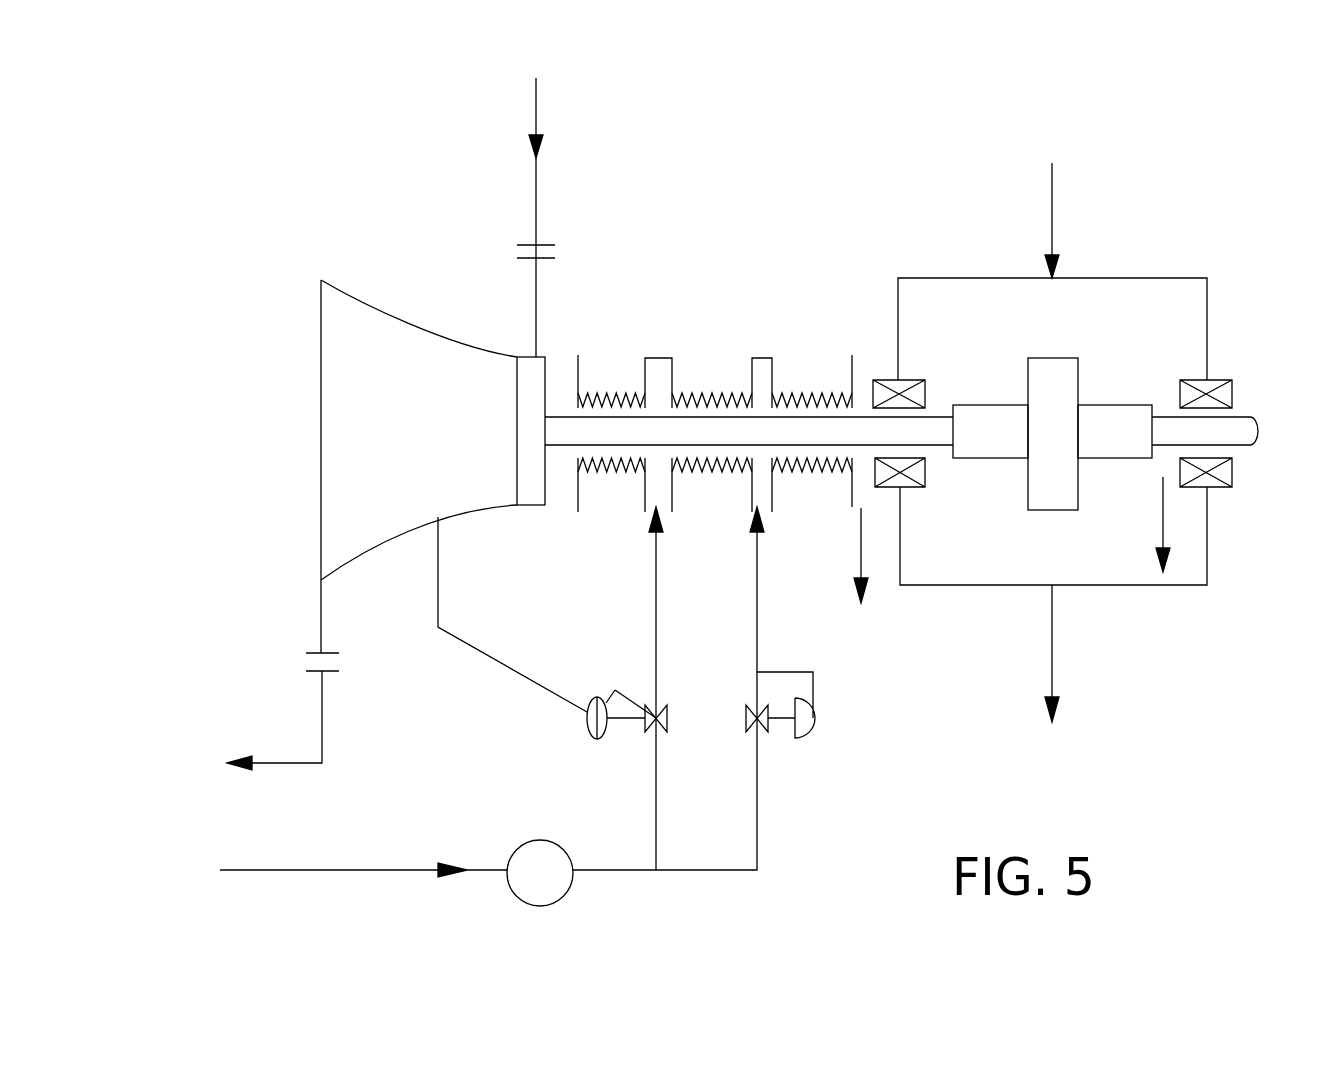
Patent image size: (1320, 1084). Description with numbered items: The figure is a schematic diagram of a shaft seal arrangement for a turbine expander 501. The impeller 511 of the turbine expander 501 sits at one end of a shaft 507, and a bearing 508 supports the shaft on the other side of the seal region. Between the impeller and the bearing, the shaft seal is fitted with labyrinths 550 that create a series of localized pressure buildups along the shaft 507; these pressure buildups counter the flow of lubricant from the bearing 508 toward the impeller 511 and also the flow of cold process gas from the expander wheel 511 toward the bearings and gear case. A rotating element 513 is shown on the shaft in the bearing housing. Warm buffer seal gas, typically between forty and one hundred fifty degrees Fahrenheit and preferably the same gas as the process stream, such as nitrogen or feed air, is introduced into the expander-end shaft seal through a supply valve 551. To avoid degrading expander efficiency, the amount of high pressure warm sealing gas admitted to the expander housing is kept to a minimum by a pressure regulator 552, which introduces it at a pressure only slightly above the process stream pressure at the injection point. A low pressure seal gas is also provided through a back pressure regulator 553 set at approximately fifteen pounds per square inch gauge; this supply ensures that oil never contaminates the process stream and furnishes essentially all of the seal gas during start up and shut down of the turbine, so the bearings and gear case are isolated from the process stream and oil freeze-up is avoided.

The turbine expander 501 is at (321, 342).
The impeller 511 is at (422, 500).
The labyrinths 550 is at (815, 383).
The bearing 508 is at (907, 380).
The shaft 507 is at (1018, 450).
The generator rotor disk 513 is at (1046, 490).
The supply valve 551 is at (537, 907).
The pressure regulator 552 is at (597, 740).
The back pressure regulator 553 is at (777, 722).